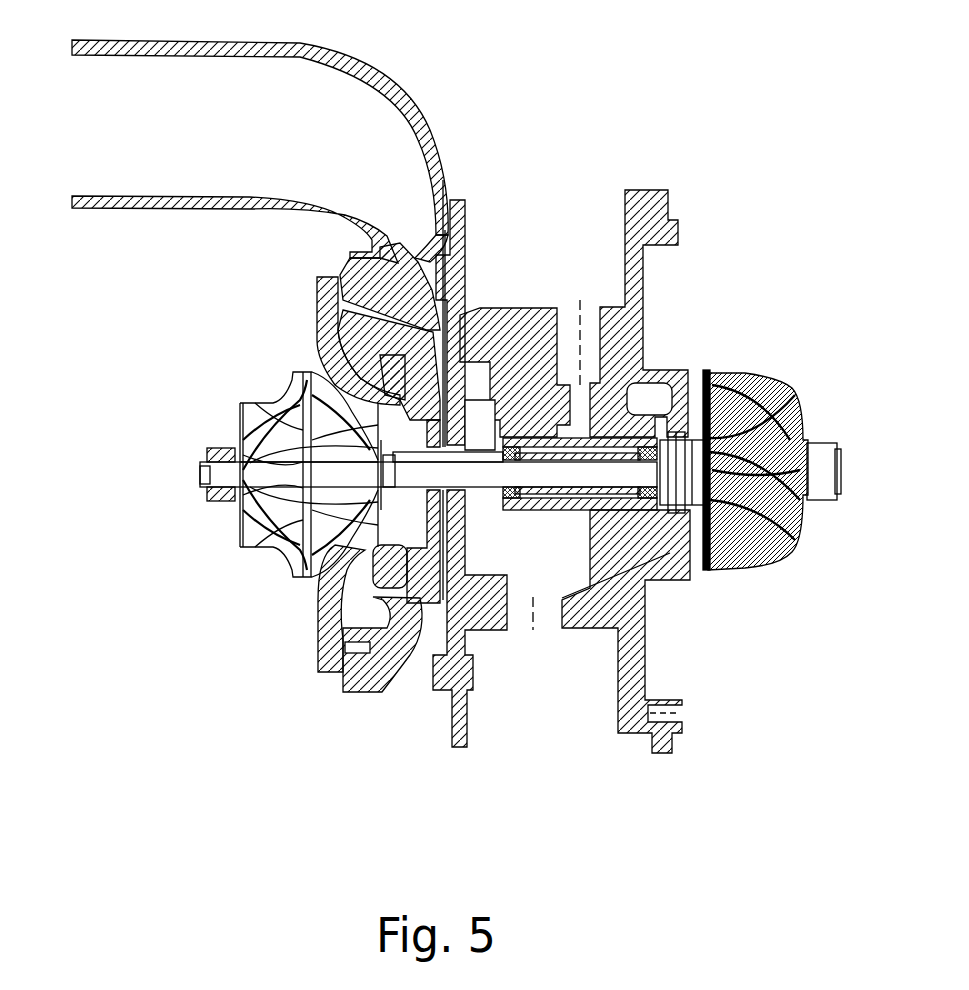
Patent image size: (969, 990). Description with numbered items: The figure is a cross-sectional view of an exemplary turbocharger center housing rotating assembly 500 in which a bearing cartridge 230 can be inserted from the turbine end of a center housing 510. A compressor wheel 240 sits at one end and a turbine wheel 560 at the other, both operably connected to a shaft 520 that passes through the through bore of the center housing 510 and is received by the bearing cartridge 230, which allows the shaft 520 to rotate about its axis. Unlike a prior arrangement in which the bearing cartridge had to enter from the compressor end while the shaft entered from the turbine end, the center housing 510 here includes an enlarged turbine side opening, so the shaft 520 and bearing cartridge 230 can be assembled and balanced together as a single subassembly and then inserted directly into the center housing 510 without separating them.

The assembly 500 is at (457, 396).
The compressor wheel 240 is at (255, 372).
The bearing cartridge 230 is at (583, 518).
The center housing 510 is at (546, 378).
The shaft 520 is at (599, 482).
The turbine wheel 560 is at (768, 356).